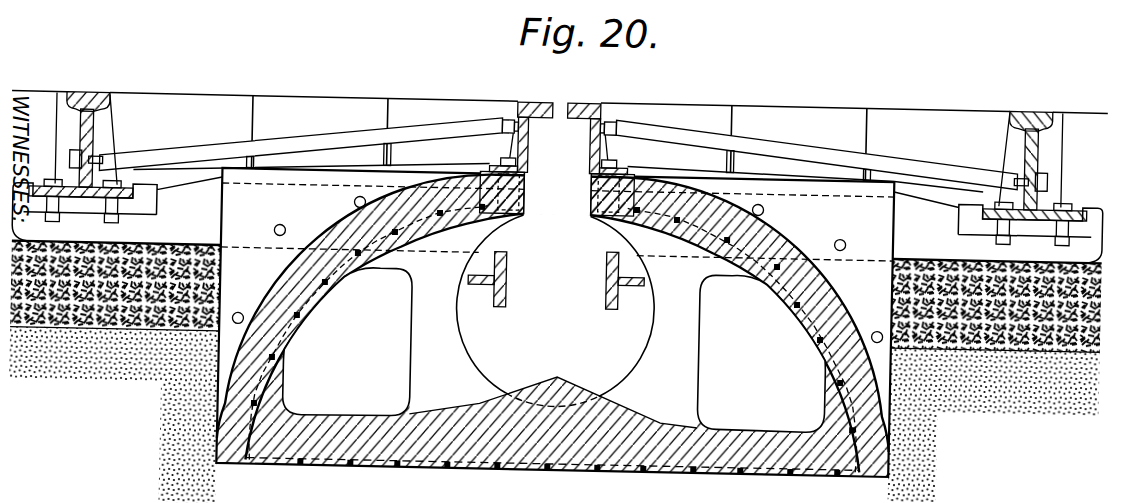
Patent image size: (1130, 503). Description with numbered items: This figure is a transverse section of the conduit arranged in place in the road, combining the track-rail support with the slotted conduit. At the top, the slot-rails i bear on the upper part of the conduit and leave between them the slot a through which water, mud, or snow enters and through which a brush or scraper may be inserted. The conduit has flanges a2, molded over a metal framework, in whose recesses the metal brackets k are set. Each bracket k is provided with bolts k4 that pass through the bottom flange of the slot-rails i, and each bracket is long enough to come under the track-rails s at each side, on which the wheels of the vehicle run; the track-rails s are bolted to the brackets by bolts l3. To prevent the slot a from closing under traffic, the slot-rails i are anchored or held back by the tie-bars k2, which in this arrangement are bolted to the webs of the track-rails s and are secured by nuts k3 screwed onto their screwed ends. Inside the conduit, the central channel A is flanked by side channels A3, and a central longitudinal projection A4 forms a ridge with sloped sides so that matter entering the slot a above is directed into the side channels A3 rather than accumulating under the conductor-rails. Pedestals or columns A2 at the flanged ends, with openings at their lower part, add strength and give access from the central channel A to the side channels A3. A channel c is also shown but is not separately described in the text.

The track-rails s is at (84, 101).
The brackets k is at (558, 209).
The tie-bars k2 is at (307, 141).
The nuts k3 is at (1074, 153).
The bolts k4 is at (589, 189).
The bolts l3 is at (1072, 242).
The slot-rails i is at (533, 103).
The slot a is at (557, 172).
The flanges a2 is at (555, 322).
The drain channel c is at (276, 367).
The central channel A is at (556, 311).
The pedestals or columns A2 is at (553, 376).
The side channels A3 is at (554, 349).
The central longitudinal projection A4 is at (562, 380).